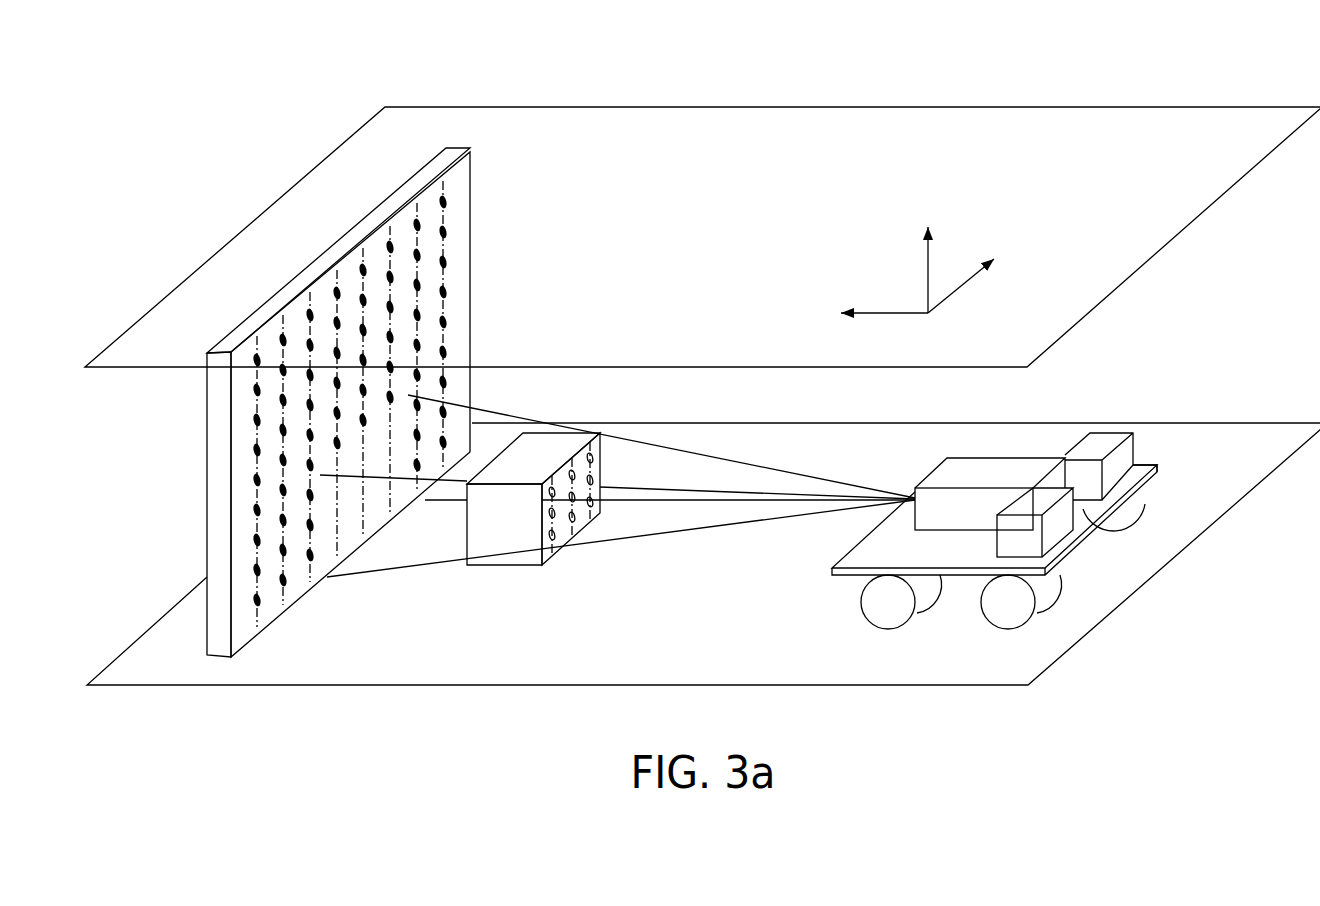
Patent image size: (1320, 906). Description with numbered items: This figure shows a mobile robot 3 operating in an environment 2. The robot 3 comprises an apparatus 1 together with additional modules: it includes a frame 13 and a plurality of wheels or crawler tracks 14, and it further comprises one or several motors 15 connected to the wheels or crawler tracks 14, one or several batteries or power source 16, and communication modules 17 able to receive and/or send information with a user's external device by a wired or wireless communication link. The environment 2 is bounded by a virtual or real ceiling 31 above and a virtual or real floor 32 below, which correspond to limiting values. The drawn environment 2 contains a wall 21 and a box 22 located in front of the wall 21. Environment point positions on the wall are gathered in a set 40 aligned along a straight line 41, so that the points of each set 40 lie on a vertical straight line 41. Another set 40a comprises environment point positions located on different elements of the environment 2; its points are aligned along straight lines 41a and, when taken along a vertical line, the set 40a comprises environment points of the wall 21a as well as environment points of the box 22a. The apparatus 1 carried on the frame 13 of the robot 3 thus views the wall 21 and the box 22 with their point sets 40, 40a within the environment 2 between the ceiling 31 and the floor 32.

The apparatus 1 is at (1005, 467).
The environment 2 is at (696, 383).
The robot 3 is at (981, 502).
The frame 13 is at (865, 550).
The wheels or crawler tracks 14 is at (1010, 610).
The motors 15 is at (1055, 525).
The batteries or power source 16 is at (1088, 498).
The communication modules 17 is at (1122, 470).
The wall 21 is at (355, 402).
The environment points of the wall 21a is at (452, 322).
The box 22 is at (571, 506).
The environment points of the box 22a is at (594, 458).
The ceiling 31 is at (328, 156).
The floor 32 is at (120, 653).
The set 40 is at (390, 214).
The set 40a is at (333, 258).
The straight line 41 is at (395, 265).
The straight lines 41a is at (330, 338).